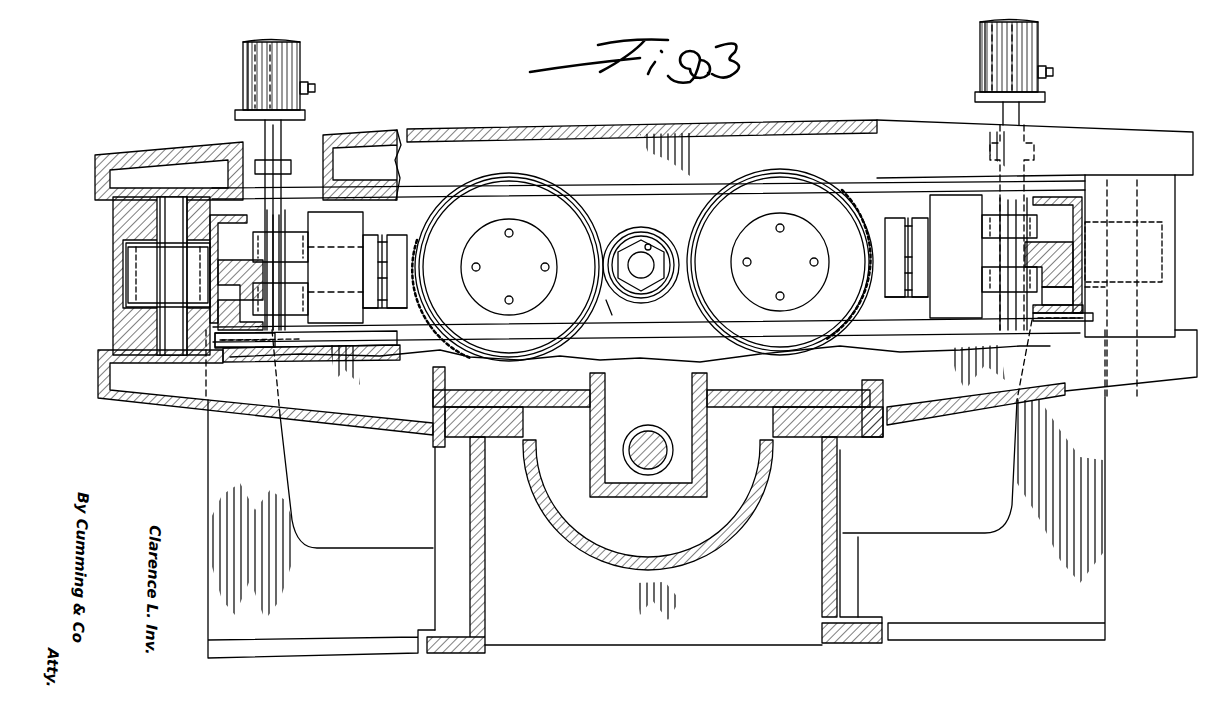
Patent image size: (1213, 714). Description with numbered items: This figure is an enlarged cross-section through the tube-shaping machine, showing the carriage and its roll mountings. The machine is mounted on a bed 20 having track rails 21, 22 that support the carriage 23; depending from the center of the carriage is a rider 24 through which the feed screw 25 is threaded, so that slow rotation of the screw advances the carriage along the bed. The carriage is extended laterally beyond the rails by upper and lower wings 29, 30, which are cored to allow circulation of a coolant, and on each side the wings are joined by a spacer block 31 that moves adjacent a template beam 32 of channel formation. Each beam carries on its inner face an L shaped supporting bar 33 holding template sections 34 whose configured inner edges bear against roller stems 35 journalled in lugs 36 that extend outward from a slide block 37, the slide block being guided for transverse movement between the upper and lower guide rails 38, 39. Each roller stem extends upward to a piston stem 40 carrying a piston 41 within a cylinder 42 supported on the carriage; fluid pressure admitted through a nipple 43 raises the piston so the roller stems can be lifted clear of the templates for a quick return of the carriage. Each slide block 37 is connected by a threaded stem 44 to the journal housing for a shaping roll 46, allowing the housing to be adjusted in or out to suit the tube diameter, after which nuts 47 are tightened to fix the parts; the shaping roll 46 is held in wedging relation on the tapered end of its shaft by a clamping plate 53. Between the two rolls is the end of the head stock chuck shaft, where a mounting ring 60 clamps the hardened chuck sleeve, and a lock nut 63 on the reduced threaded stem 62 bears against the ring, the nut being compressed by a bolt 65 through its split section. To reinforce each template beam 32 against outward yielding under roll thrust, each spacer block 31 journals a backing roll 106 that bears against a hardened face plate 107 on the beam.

The bed 20 is at (822, 562).
The track rail 21 is at (525, 420).
The track rail 22 is at (790, 412).
The carriage 23 is at (480, 393).
The rider 24 is at (603, 462).
The feed screw 25 is at (660, 448).
The upper wing 29 is at (197, 150).
The lower wing 30 is at (244, 410).
The spacer block 31 is at (113, 225).
The template beam 32 is at (225, 250).
The L shaped supporting bar 33 is at (238, 302).
The template section 34 is at (246, 262).
The roller stem 35 is at (280, 270).
The lug 36 is at (310, 240).
The slide block 37 is at (337, 312).
The upper guide rail 38 is at (318, 198).
The lower guide rail 39 is at (297, 345).
The piston stem 40 is at (282, 142).
The piston 41 is at (300, 58).
The cylinder 42 is at (242, 78).
The nipple 43 is at (316, 88).
The threaded stem 44 is at (383, 240).
The shaping roll 46 is at (540, 190).
The nut 47 is at (385, 306).
The clamping plate 53 is at (490, 236).
The mounting ring 60 is at (672, 262).
The reduced threaded stem 62 is at (648, 272).
The lock nut 63 is at (630, 246).
The bolt 65 is at (650, 245).
The backing roll 106 is at (126, 275).
The hardened face plate 107 is at (205, 274).